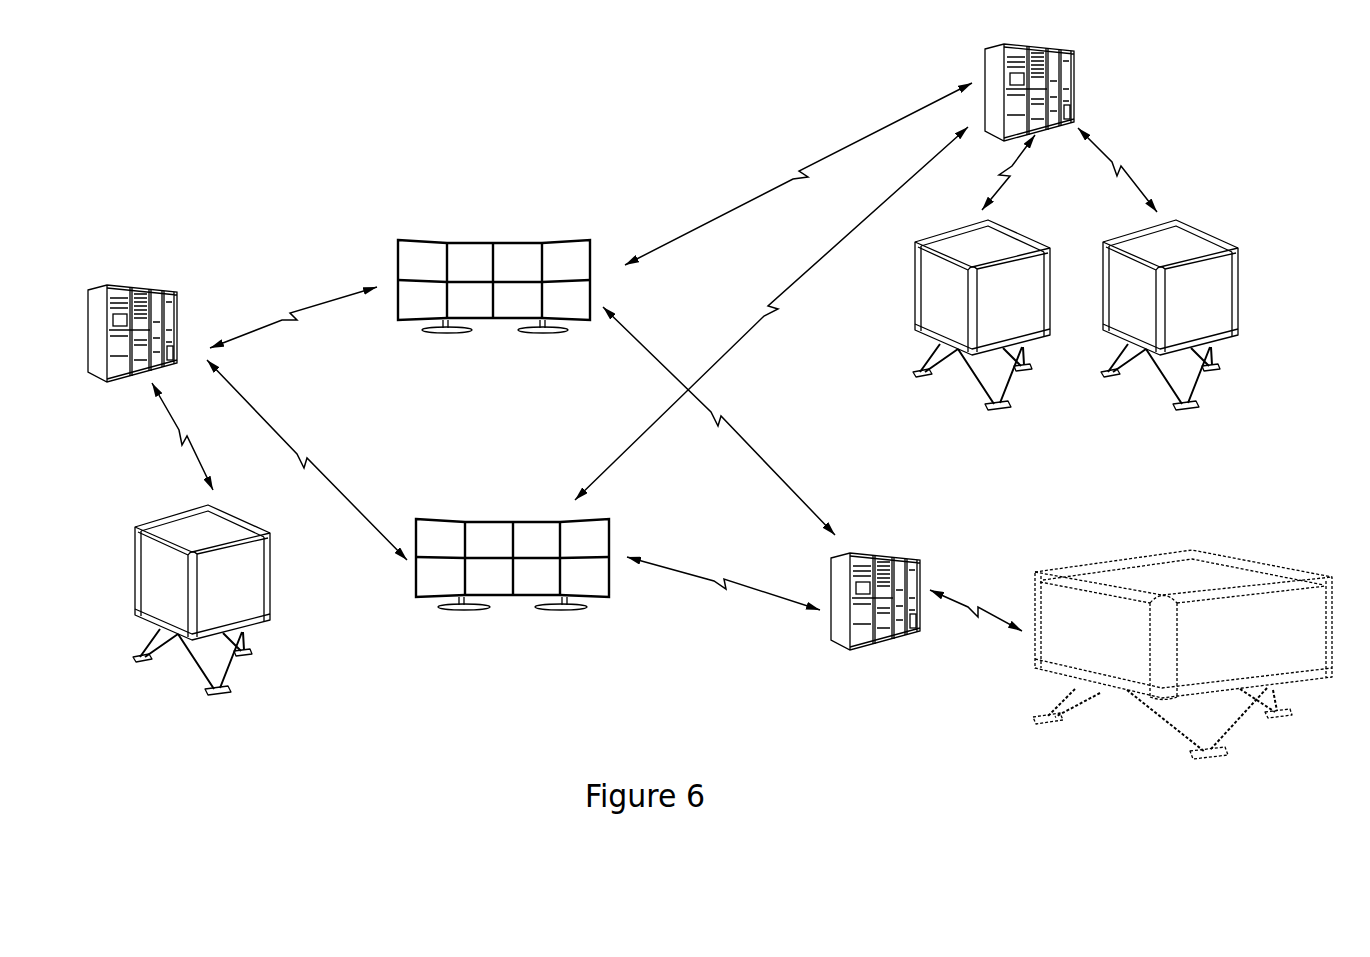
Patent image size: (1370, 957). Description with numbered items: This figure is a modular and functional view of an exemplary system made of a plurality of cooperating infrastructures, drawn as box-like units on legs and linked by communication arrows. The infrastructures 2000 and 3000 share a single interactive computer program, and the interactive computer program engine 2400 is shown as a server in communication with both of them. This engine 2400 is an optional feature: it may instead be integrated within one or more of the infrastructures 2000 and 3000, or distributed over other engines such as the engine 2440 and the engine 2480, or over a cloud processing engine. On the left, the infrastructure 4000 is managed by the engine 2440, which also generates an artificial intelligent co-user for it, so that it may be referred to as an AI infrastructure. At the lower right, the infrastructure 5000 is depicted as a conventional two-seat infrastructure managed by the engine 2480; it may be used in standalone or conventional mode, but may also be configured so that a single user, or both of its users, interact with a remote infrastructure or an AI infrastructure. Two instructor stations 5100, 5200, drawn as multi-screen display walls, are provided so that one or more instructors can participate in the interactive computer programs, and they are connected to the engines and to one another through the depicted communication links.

The infrastructure 2000 is at (935, 299).
The infrastructure 3000 is at (1197, 243).
The infrastructure 4000 is at (243, 583).
The infrastructure 5000 is at (1092, 563).
The interactive computer program engine 2400 is at (993, 65).
The engine 2440 is at (138, 290).
The engine 2480 is at (882, 637).
The instructor station 5100 is at (468, 263).
The instructor station 5200 is at (487, 540).